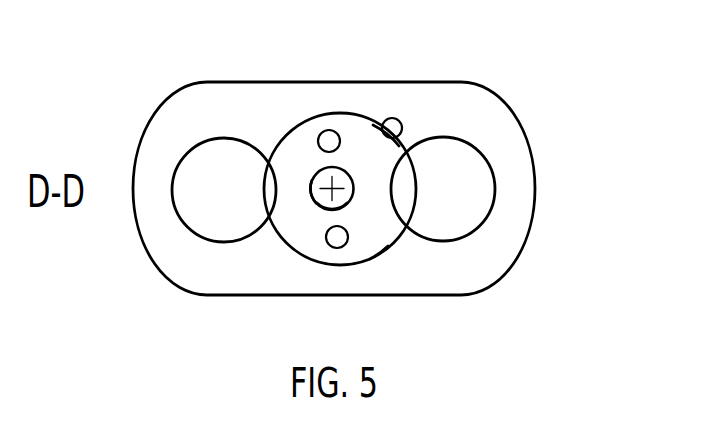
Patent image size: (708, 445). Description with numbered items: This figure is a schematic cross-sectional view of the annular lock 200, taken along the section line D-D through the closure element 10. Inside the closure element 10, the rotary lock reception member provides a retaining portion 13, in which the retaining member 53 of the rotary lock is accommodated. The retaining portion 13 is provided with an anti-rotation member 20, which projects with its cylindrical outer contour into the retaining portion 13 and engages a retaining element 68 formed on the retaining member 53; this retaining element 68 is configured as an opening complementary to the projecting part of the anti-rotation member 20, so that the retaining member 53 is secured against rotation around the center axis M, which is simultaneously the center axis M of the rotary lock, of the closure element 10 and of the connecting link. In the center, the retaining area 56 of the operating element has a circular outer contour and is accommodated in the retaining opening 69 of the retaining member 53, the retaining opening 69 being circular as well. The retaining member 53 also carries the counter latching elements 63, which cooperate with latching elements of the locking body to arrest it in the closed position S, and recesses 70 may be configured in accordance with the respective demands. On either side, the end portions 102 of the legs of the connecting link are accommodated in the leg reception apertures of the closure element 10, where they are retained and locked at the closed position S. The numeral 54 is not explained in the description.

The closure element 10 is at (153, 264).
The retaining portion 13 is at (268, 143).
The end portions 102 is at (193, 172).
The retaining opening 69 is at (310, 172).
The center axis M is at (352, 168).
The counter latching elements 63 is at (328, 130).
The anti-rotation member 20 is at (392, 118).
The retaining element 68 is at (382, 140).
The inner wall 54 is at (312, 208).
The retaining area 56 is at (331, 211).
The recesses 70 is at (276, 198).
The retaining member 53 is at (392, 249).
The annular lock 200 is at (541, 79).
The closed position S is at (571, 92).